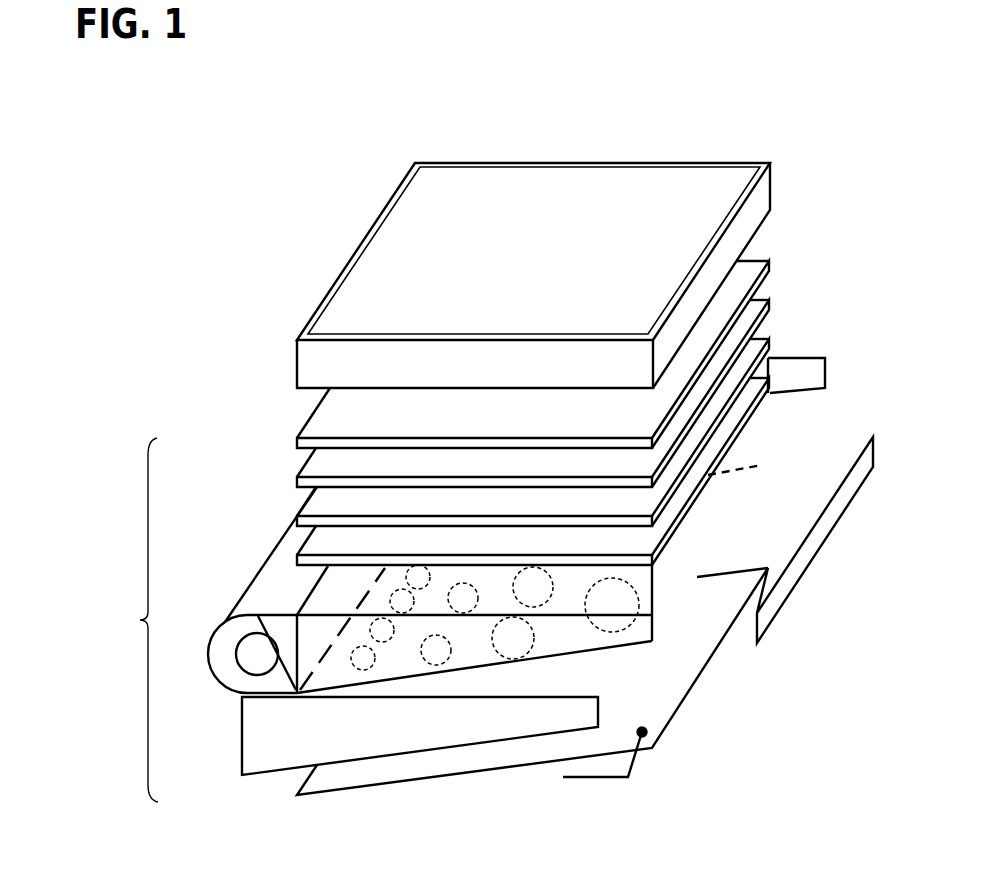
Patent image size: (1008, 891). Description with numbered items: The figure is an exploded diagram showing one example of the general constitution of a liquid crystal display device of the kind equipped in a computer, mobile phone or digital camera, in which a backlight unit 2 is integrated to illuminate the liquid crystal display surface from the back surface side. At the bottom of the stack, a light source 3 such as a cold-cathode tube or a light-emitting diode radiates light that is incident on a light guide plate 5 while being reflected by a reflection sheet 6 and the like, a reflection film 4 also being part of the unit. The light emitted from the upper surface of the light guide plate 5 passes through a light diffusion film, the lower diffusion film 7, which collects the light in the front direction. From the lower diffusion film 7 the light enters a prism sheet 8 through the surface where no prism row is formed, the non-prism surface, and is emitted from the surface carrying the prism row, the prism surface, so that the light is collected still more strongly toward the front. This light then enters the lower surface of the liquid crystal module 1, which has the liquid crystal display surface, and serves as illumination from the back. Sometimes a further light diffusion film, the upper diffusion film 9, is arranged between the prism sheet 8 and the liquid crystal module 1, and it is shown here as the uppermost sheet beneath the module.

The liquid crystal module 1 is at (695, 197).
The backlight unit 2 is at (122, 620).
The light source 3 is at (255, 658).
The reflection film 4 is at (262, 587).
The light guide plate 5 is at (645, 592).
The reflection sheet 6 is at (863, 470).
The light diffusion film (lower diffusion film) 7 is at (330, 545).
The prism sheet 8 is at (642, 462).
The light diffusion film (upper diffusion film) 9 is at (330, 423).